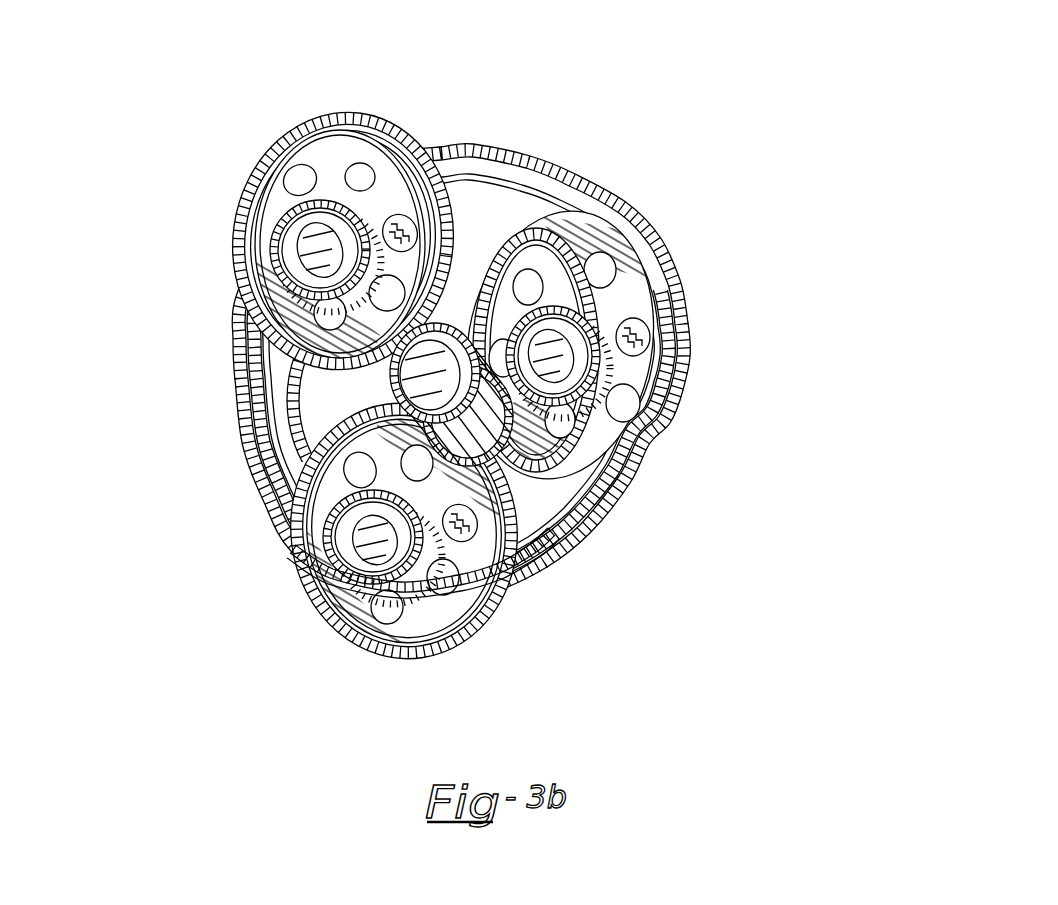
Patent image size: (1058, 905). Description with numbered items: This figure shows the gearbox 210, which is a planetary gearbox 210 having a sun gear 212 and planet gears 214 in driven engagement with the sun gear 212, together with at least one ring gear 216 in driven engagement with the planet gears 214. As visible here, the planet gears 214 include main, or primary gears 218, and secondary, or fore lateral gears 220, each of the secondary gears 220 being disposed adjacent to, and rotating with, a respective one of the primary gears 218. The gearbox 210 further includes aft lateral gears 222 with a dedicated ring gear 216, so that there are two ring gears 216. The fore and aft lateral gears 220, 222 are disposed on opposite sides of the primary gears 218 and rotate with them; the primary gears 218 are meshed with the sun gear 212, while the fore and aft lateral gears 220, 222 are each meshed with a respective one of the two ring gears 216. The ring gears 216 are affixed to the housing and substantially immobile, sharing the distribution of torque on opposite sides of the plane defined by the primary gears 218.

The gearbox 210 is at (464, 343).
The sun gear 212 is at (237, 410).
The planet gears 214 is at (226, 220).
The ring gear 216 is at (472, 165).
The primary gears 218 is at (683, 313).
The fore lateral gears 220 is at (552, 318).
The aft lateral gears 222 is at (480, 510).